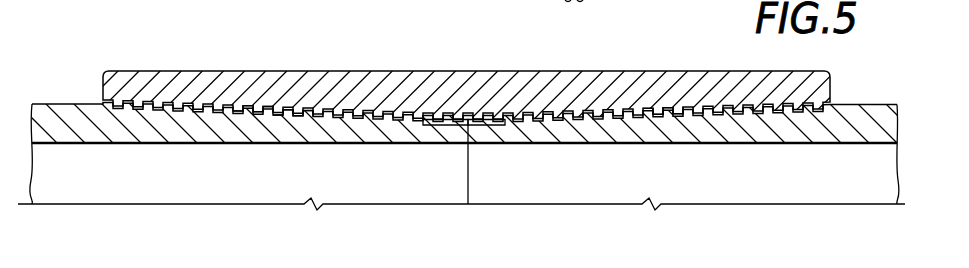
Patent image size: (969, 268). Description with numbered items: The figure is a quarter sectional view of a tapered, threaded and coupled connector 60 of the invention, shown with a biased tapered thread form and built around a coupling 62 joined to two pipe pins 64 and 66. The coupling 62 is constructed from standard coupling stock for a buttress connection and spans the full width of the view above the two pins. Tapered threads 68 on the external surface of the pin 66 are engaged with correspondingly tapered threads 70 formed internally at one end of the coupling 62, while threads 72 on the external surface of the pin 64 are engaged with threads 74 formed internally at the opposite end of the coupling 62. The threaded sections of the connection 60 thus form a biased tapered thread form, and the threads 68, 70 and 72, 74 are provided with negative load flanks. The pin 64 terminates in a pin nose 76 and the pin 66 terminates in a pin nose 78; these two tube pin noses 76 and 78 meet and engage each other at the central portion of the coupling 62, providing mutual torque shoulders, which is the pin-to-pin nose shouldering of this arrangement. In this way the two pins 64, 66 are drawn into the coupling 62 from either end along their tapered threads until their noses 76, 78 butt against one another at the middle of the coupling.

The tapered, threaded and coupled connector 60 is at (105, 36).
The coupling 62 is at (320, 76).
The pipe pin 64 is at (68, 118).
The pipe pin 66 is at (870, 112).
The tapered threads 68 is at (665, 142).
The tapered threads 70 is at (664, 118).
The threads 72 is at (288, 115).
The threads 74 is at (256, 105).
The pin nose 76 is at (457, 128).
The pin nose 78 is at (475, 126).